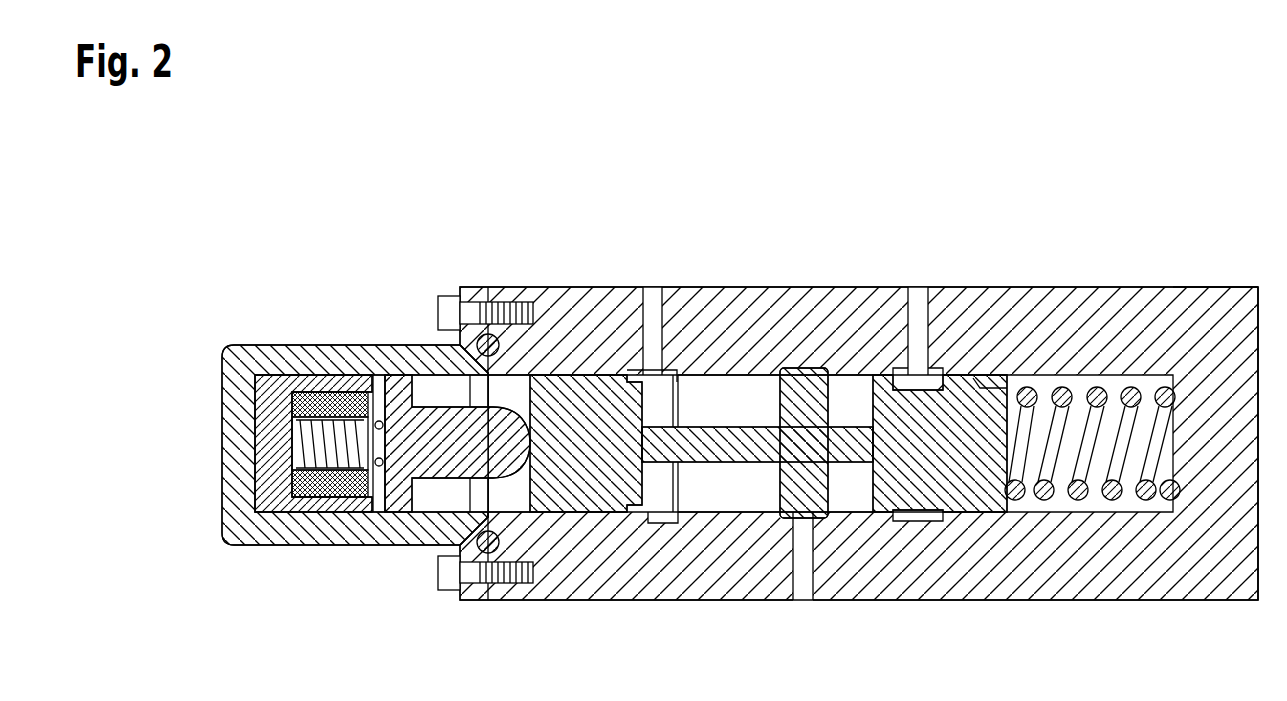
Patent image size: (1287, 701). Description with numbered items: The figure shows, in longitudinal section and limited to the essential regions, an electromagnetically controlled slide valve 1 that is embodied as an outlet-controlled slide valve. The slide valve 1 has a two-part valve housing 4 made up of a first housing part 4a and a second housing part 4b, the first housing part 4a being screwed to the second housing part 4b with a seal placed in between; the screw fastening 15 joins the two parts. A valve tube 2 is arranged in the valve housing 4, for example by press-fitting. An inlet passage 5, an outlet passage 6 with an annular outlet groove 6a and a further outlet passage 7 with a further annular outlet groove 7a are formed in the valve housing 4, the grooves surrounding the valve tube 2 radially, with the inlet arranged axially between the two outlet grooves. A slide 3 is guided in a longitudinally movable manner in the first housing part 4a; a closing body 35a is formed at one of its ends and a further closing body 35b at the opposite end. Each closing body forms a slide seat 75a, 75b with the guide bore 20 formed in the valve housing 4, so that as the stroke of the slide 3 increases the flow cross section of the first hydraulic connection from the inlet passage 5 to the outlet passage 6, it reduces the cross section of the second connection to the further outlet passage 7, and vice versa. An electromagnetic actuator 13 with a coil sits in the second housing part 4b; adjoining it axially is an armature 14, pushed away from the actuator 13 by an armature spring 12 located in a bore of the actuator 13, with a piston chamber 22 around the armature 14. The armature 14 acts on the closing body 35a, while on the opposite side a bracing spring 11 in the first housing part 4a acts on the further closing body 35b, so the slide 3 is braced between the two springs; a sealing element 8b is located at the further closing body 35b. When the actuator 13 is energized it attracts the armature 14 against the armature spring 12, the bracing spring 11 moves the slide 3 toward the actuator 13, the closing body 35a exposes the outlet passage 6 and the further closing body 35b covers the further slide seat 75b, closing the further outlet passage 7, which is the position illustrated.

The slide valve 1 is at (240, 182).
The valve tube 2 is at (376, 495).
The slide 3 is at (742, 410).
The valve housing 4 is at (1126, 333).
The first housing part 4a is at (1183, 307).
The second housing part 4b is at (266, 367).
The inlet passage 5 is at (805, 590).
The outlet passage 6 is at (651, 300).
The annular outlet groove 6a is at (658, 522).
The further outlet passage 7 is at (918, 300).
The further annular outlet groove 7a is at (915, 522).
The sealing element 8b is at (993, 378).
The bracing spring 11 is at (1057, 377).
The armature spring 12 is at (312, 444).
The electromagnetic actuator 13 is at (277, 409).
The armature 14 is at (400, 390).
The fastening screw 15 is at (470, 294).
The guide bore 20 is at (745, 500).
The piston chamber 22 is at (437, 493).
The closing body 35a is at (572, 400).
The further closing body 35b is at (890, 400).
The slide seat 75a is at (680, 380).
The further slide seat 75b is at (936, 386).